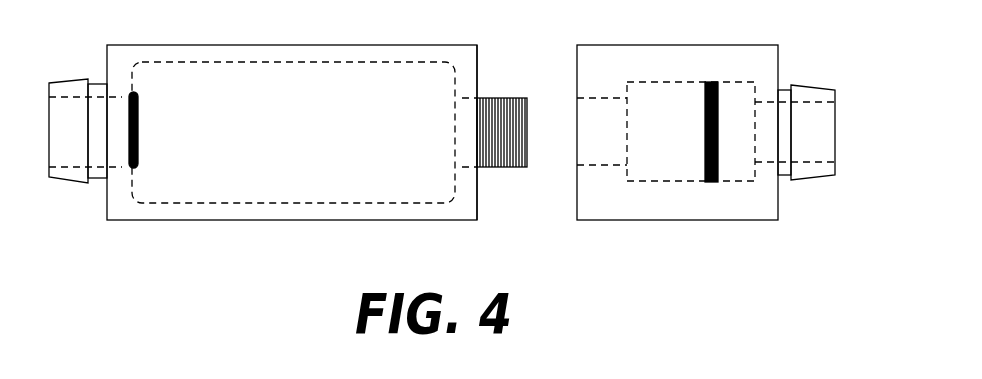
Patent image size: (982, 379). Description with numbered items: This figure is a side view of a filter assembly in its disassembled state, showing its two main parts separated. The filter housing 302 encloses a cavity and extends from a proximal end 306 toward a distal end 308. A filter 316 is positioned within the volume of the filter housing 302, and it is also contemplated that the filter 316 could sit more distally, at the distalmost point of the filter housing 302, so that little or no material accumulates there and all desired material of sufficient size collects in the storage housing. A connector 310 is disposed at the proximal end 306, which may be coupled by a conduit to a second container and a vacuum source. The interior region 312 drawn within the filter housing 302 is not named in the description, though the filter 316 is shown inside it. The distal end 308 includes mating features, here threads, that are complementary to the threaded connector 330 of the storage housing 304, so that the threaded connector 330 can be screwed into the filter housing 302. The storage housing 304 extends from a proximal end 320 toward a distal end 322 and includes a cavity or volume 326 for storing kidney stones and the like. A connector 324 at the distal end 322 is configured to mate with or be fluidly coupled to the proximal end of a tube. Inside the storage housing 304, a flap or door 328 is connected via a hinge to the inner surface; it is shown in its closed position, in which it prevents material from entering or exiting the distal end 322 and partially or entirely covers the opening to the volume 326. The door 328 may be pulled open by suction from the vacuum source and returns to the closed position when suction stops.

The filter housing 302 is at (635, 220).
The storage housing 304 is at (223, 220).
The proximal end 306 is at (812, 187).
The distal end 308 is at (584, 240).
The connector 310 is at (810, 86).
The cavity 312 is at (735, 165).
The filter 316 is at (703, 157).
The proximal end 320 is at (441, 230).
The distal end 322 is at (78, 208).
The connector 324 is at (91, 82).
The cavity or volume 326 is at (308, 157).
The flap or door 328 is at (138, 146).
The threaded connector 330 is at (503, 97).